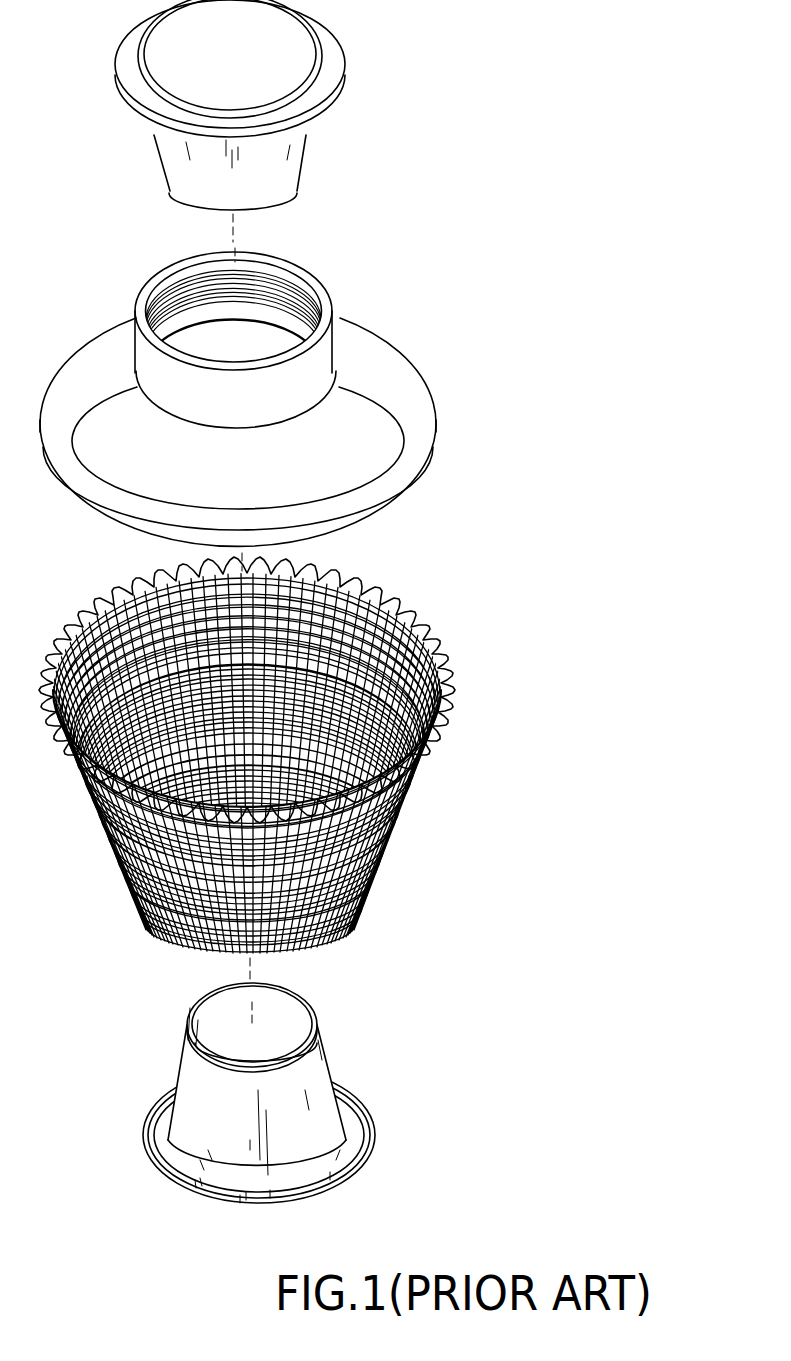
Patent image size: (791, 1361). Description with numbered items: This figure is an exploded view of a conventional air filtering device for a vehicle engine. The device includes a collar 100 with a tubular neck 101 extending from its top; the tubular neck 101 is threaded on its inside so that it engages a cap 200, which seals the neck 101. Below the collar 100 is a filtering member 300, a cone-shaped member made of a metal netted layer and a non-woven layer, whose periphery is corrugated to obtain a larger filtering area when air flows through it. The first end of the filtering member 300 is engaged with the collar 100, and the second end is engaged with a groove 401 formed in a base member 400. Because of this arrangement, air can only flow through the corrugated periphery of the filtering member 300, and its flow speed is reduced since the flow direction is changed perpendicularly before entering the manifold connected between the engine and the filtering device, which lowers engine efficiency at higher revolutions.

The collar 100 is at (413, 417).
The tubular neck 101 is at (332, 308).
The cap 200 is at (330, 74).
The filtering member 300 is at (405, 805).
The base member 400 is at (333, 1176).
The groove 401 is at (365, 1107).